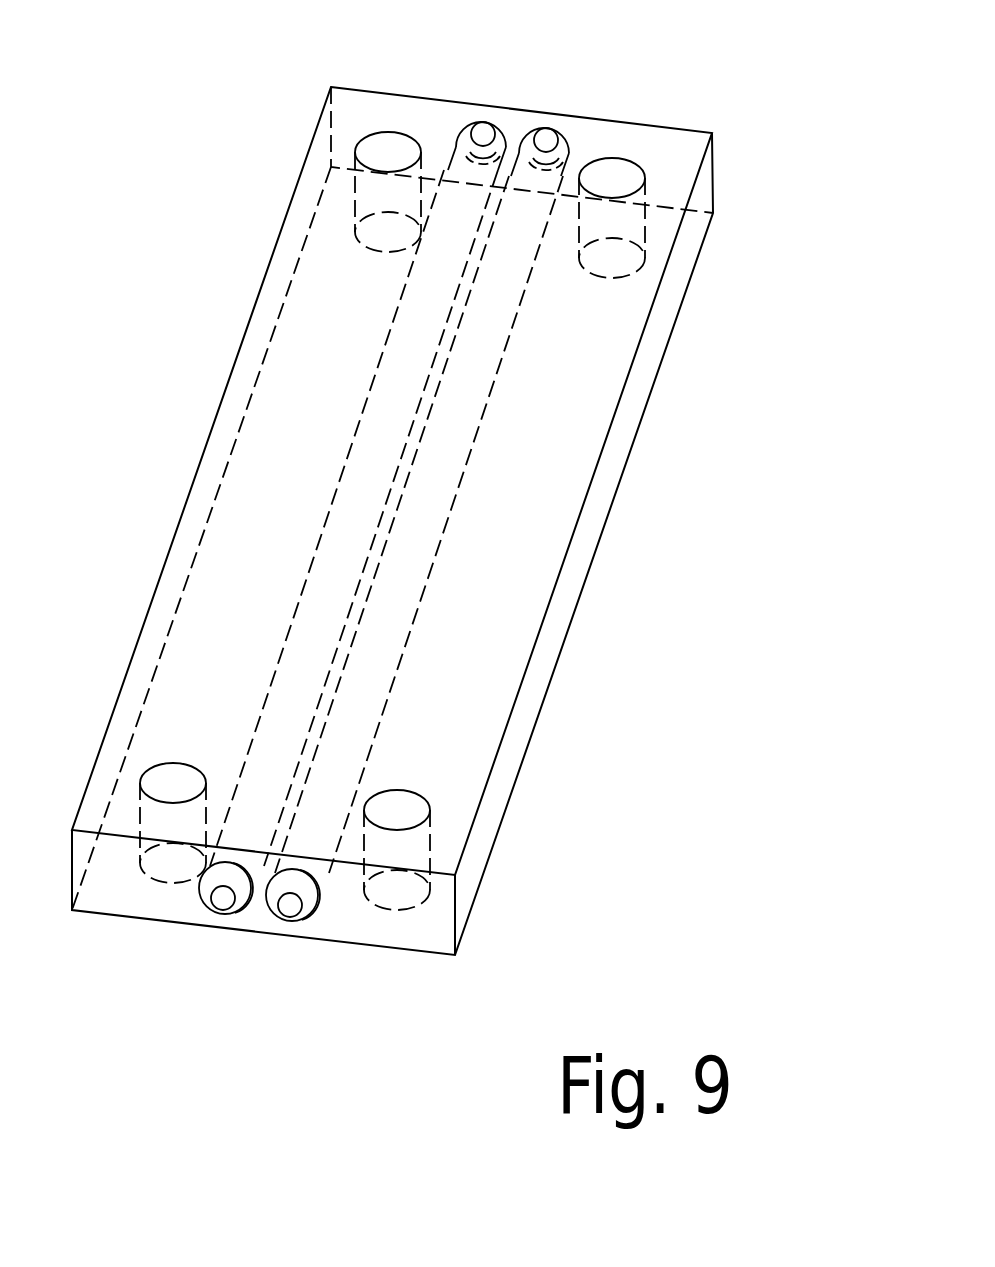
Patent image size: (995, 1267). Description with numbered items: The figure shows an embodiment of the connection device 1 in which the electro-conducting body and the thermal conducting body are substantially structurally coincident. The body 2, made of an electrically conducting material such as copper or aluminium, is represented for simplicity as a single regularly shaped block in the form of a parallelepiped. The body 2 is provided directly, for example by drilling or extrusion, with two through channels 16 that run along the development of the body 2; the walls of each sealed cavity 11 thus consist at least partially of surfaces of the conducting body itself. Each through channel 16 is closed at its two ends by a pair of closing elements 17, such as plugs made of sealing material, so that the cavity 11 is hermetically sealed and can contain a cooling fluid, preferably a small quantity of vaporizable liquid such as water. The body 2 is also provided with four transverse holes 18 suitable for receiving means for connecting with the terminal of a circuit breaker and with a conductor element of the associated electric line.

The connection device 1 is at (433, 523).
The first body 2 is at (520, 734).
The sealed cavity 11 is at (455, 413).
The through channel 16 is at (290, 606).
The closing element 17 is at (475, 131).
The transverse hole 18 is at (383, 145).